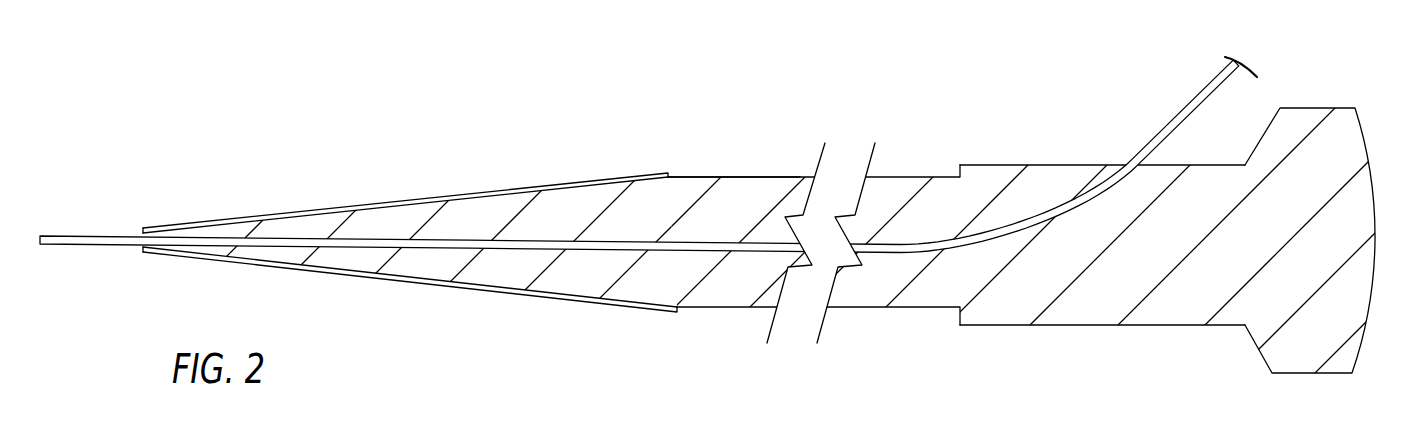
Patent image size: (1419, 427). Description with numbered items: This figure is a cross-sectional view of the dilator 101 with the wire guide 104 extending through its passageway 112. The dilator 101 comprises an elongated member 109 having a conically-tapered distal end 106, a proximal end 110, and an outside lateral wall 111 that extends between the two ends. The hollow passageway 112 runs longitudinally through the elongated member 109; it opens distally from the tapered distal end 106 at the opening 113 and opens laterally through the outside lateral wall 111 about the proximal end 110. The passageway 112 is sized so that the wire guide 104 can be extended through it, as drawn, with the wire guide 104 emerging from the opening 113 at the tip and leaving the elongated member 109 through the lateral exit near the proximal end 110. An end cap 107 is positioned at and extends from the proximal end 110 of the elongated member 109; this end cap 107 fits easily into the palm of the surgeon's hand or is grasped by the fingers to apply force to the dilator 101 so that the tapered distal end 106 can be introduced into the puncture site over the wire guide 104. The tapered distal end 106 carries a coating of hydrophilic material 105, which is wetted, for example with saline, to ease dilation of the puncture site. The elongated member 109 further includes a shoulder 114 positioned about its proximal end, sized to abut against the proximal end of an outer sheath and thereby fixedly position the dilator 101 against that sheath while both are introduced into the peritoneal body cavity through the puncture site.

The dilator 101 is at (765, 82).
The wire guide 104 is at (48, 237).
The hydrophilic material 105 is at (278, 212).
The conically-tapered distal end 106 is at (488, 132).
The end cap 107 is at (1370, 167).
The elongated member 109 is at (913, 177).
The proximal end 110 is at (1103, 140).
The outside lateral wall 111 is at (710, 177).
The passageway 112 is at (1027, 217).
The opening 113 is at (142, 237).
The shoulder 114 is at (960, 313).